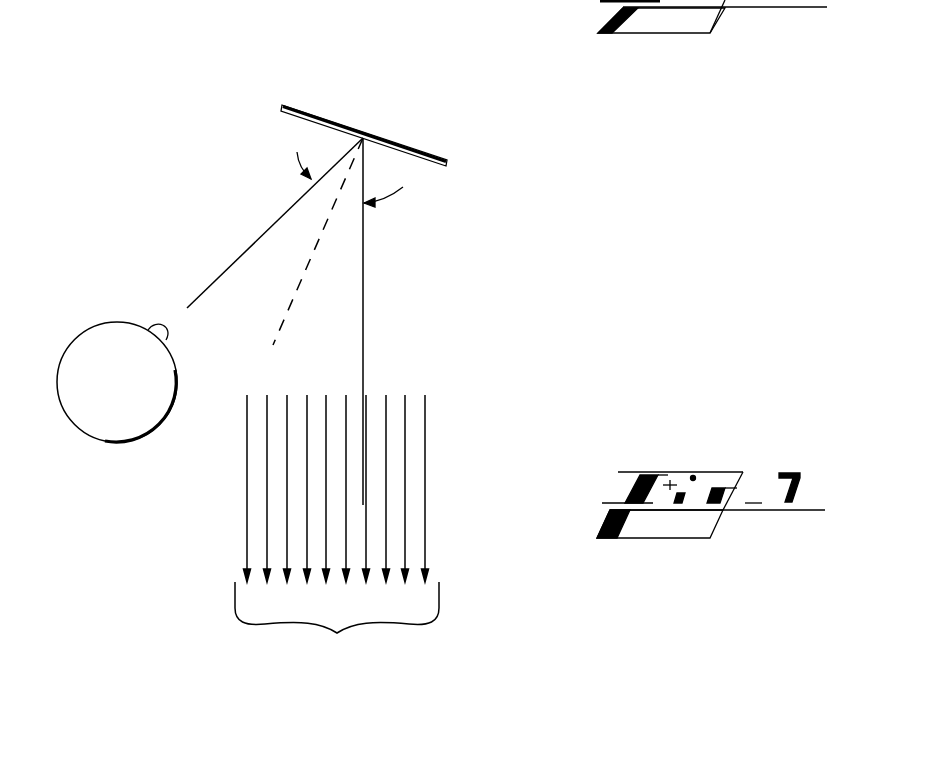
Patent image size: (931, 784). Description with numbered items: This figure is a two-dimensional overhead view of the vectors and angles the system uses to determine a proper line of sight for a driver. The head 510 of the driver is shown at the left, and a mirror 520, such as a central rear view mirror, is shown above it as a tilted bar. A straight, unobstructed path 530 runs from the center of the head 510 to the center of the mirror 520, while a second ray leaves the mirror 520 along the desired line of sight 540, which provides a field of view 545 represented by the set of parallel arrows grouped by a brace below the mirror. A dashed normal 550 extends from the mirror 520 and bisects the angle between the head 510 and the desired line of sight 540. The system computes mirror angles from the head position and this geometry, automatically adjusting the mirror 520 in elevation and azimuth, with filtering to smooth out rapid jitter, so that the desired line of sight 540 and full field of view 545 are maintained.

The head 510 is at (93, 327).
The mirror 520 is at (327, 113).
The incident light beam 530 is at (277, 218).
The desired line of sight 540 is at (363, 347).
The normal 550 is at (318, 242).
The field of view 545 is at (337, 633).